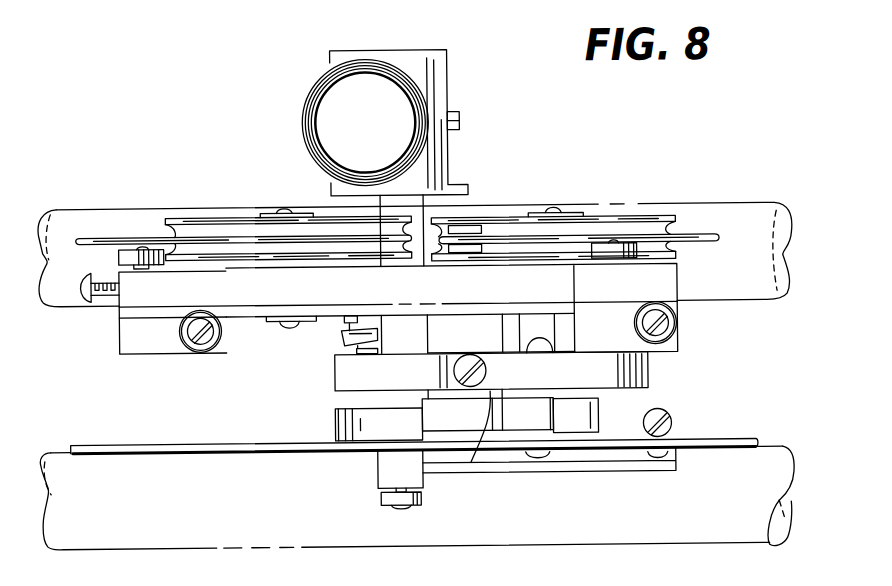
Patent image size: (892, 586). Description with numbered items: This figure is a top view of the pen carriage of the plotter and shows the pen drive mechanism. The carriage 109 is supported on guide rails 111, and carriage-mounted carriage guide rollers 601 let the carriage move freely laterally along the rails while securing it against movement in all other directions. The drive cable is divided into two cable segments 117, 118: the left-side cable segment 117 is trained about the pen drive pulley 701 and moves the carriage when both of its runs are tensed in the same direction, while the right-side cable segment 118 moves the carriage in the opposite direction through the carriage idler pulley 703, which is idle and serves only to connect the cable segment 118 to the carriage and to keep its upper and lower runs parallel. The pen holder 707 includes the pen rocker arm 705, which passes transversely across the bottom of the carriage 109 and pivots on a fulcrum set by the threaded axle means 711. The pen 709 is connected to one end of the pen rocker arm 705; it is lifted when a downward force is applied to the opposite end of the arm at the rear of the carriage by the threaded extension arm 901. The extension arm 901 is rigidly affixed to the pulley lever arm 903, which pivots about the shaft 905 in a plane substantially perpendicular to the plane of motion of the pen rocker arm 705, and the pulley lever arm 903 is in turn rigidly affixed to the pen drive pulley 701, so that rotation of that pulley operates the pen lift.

The carriage 109 is at (386, 297).
The guide rails 111 is at (748, 224).
The left-side cable segment 117 is at (700, 236).
The right-side cable segment 118 is at (110, 234).
The carriage guide rollers 601 is at (200, 340).
The pen drive pulley 701 is at (592, 224).
The carriage idler pulley 703 is at (194, 228).
The pen rocker arm 705 is at (505, 411).
The pen holder 707 is at (432, 64).
The pen 709 is at (398, 127).
The threaded axle means 711 is at (84, 292).
The threaded extension arm 901 is at (486, 372).
The pulley lever arm 903 is at (650, 374).
The shaft 905 is at (555, 212).